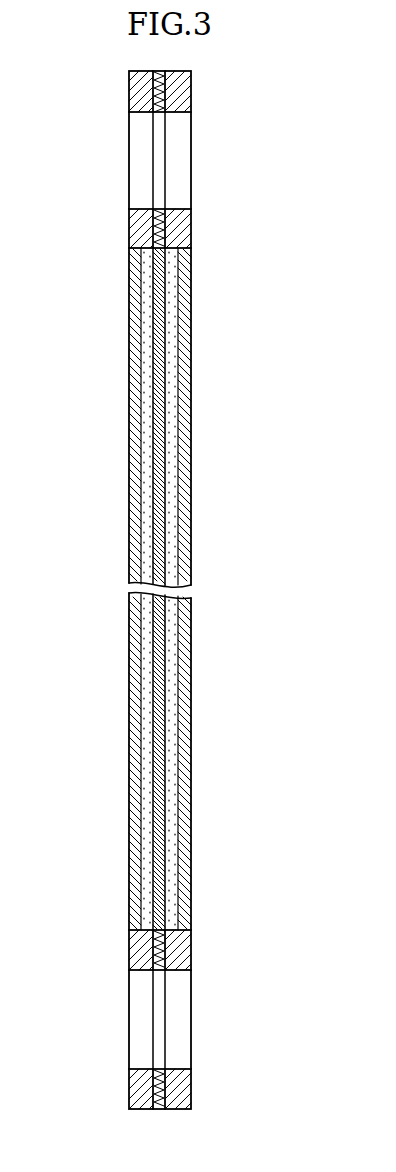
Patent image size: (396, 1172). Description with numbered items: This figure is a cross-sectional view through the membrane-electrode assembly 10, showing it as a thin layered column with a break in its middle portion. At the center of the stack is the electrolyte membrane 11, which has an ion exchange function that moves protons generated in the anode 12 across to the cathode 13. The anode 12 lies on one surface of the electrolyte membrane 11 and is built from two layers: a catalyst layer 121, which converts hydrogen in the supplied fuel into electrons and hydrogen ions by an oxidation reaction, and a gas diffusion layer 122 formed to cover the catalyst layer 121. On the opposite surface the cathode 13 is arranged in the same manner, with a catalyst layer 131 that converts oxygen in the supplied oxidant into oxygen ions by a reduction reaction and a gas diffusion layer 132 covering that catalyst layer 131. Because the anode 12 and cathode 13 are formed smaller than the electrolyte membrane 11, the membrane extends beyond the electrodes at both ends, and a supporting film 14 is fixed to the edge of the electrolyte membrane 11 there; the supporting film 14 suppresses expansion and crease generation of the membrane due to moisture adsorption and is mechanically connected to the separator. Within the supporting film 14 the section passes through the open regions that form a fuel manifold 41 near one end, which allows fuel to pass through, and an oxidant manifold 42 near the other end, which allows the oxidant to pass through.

The membrane-electrode assembly 10 is at (161, 590).
The electrolyte membrane 11 is at (158, 457).
The anode 12 is at (82, 589).
The catalyst layer 121 is at (148, 689).
The gas diffusion layer 122 is at (137, 727).
The cathode 13 is at (238, 589).
The catalyst layer 131 is at (170, 688).
The gas diffusion layer 132 is at (183, 727).
The supporting film 14 is at (182, 90).
The fuel manifold 41 is at (178, 1018).
The oxidant manifold 42 is at (175, 158).